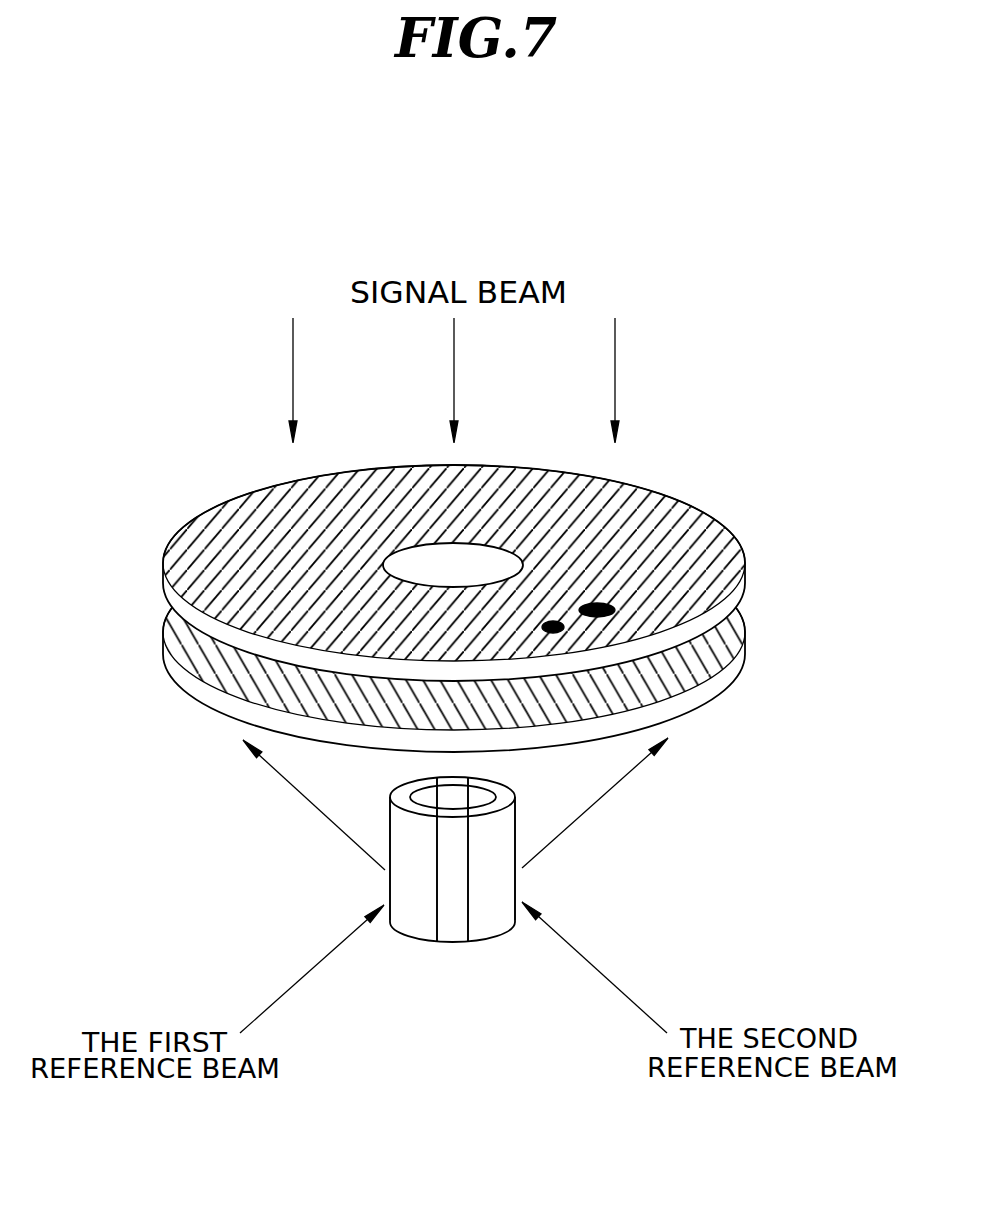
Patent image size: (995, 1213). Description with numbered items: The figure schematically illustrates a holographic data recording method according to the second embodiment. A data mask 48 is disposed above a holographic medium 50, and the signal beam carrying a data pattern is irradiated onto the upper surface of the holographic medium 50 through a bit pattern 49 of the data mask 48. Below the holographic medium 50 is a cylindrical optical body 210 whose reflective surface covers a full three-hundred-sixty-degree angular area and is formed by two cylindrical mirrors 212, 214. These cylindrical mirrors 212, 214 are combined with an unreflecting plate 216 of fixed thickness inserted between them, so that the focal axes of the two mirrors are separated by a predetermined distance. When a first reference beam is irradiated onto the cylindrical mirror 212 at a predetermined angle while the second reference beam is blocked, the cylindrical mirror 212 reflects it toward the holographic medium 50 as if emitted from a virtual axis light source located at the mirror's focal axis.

The data mask 48 is at (700, 538).
The holographic medium 50 is at (703, 650).
The bit pattern 49 is at (614, 611).
The cylindrical optical body 210 is at (567, 1035).
The cylindrical mirror 212 is at (413, 932).
The unreflecting plate 216 is at (450, 932).
The cylindrical mirror 214 is at (497, 930).